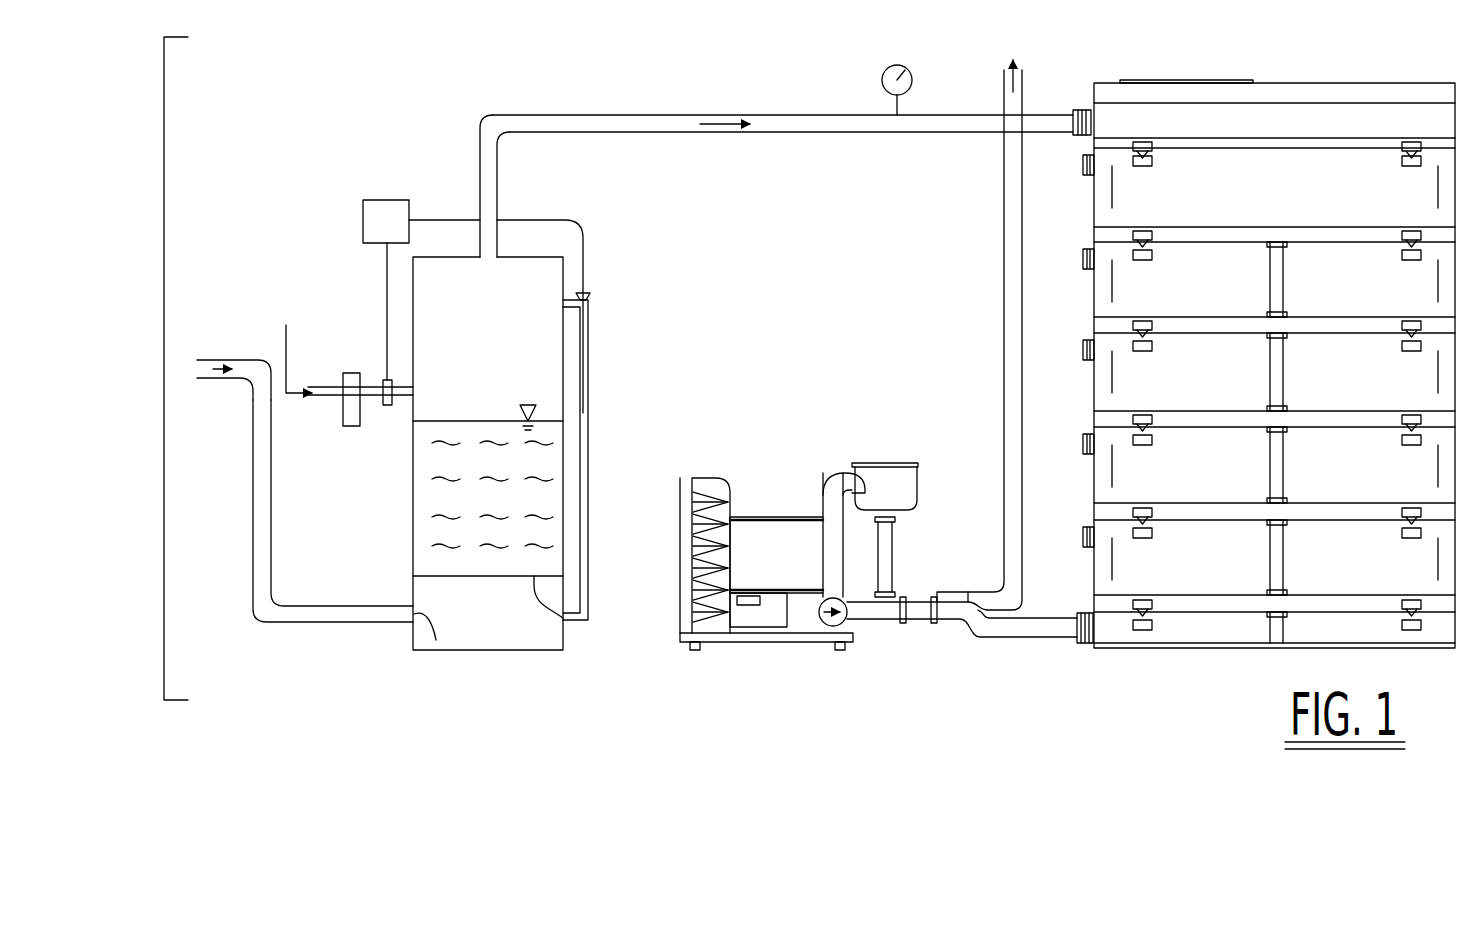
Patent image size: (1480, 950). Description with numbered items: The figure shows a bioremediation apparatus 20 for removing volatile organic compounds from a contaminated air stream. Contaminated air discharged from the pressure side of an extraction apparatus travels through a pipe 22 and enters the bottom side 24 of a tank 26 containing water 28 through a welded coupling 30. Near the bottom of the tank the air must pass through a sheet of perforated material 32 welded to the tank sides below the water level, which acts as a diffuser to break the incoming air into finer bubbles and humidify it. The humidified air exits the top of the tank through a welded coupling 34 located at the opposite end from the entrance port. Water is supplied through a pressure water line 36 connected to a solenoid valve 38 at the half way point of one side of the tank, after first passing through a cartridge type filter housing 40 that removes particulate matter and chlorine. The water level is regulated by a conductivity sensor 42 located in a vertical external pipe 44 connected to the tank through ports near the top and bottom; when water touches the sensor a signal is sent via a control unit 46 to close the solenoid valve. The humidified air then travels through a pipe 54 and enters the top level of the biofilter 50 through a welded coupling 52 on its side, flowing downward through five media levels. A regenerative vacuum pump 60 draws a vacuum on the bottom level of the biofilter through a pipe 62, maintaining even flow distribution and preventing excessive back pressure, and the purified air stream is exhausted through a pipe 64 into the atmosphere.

The bioremediation apparatus 20 is at (165, 378).
The pipe 22 is at (233, 380).
The bottom side 24 is at (413, 632).
The tank 26 is at (413, 518).
The water 28 is at (430, 456).
The welded coupling 30 is at (436, 640).
The sheet of perforated material 32 is at (563, 618).
The welded coupling 34 is at (497, 240).
The pressure water line 36 is at (286, 357).
The solenoid valve 38 is at (387, 375).
The cartridge type filter housing 40 is at (352, 372).
The conductivity sensor 42 is at (590, 297).
The external pipe 44 is at (588, 465).
The control unit 46 is at (402, 207).
The biofilter 50 is at (1409, 72).
The welded coupling 52 is at (1083, 108).
The pipe 54 is at (822, 112).
The regenerative vacuum pump 60 is at (778, 652).
The pipe 62 is at (1005, 637).
The pipe 64 is at (1022, 95).